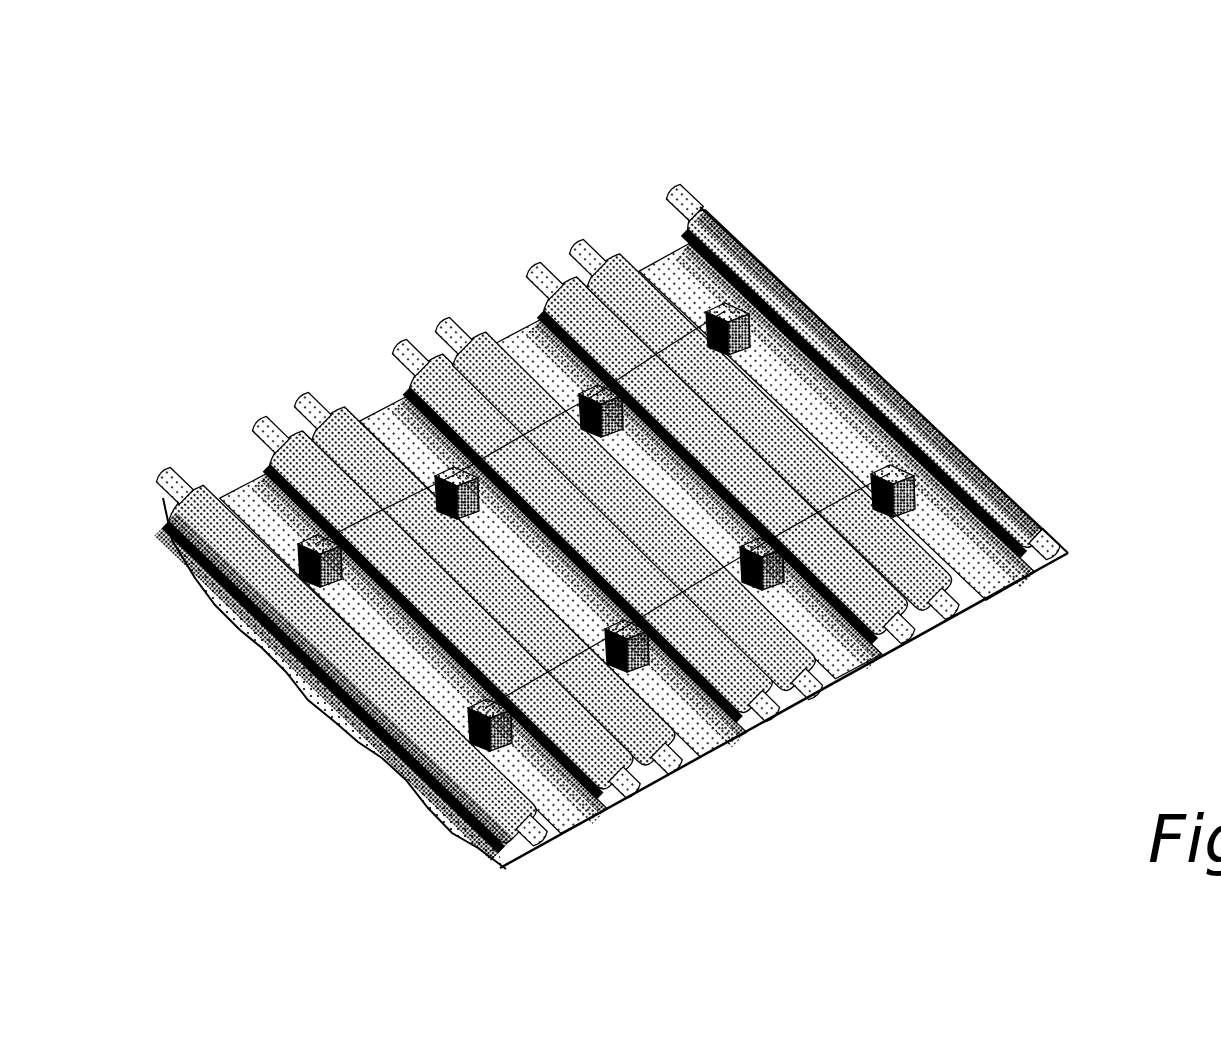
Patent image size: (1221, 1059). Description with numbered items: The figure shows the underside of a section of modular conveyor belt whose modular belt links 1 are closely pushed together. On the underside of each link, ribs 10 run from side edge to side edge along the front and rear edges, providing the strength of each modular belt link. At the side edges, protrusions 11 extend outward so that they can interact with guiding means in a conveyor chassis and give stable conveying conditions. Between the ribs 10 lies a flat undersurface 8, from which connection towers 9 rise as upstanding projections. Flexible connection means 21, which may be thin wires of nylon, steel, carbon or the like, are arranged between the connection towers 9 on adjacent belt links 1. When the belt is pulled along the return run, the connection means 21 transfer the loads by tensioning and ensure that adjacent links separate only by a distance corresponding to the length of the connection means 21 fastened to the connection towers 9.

The modular belt link 1 is at (243, 500).
The flat undersurface 8 is at (983, 567).
The connection tower 9 is at (745, 330).
The rib 10 is at (207, 533).
The protrusion 11 is at (590, 253).
The flexible connection means 21 is at (873, 480).